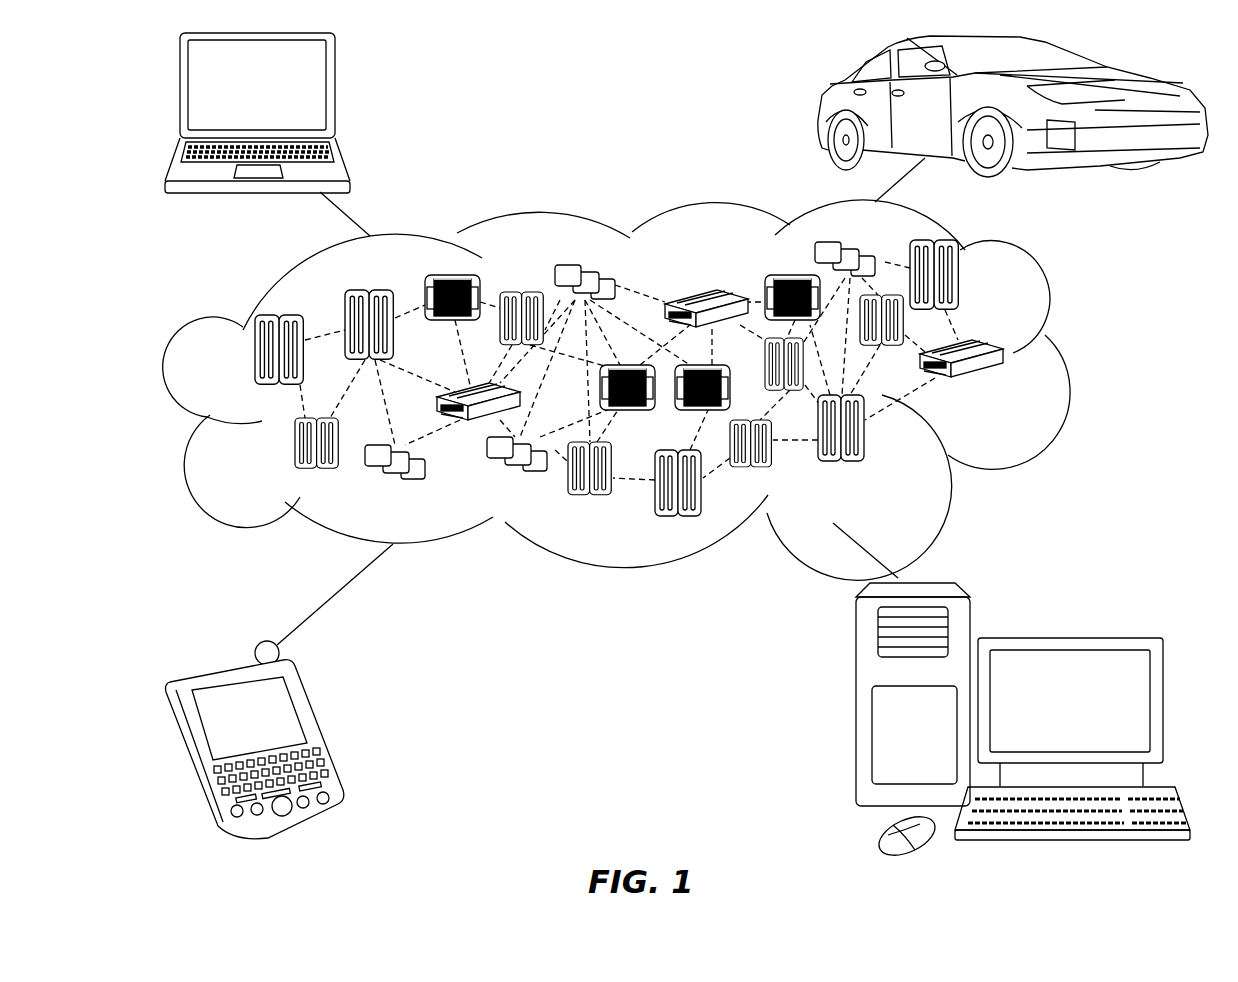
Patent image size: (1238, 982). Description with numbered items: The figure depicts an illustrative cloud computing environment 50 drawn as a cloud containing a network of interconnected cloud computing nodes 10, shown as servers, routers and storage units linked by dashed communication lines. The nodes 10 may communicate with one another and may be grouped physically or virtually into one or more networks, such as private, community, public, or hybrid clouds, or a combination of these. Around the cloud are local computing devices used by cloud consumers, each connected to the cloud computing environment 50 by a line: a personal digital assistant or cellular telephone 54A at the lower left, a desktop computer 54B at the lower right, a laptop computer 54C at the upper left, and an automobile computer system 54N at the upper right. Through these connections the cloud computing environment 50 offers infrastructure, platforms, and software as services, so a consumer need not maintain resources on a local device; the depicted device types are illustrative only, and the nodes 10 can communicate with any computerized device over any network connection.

The cloud computing nodes 10 is at (1010, 389).
The cloud computing environment 50 is at (1070, 356).
The personal digital assistant (PDA) or cellular telephone 54A is at (320, 730).
The desktop computer 54B is at (1069, 638).
The laptop computer 54C is at (335, 93).
The automobile computer system 54N is at (822, 108).